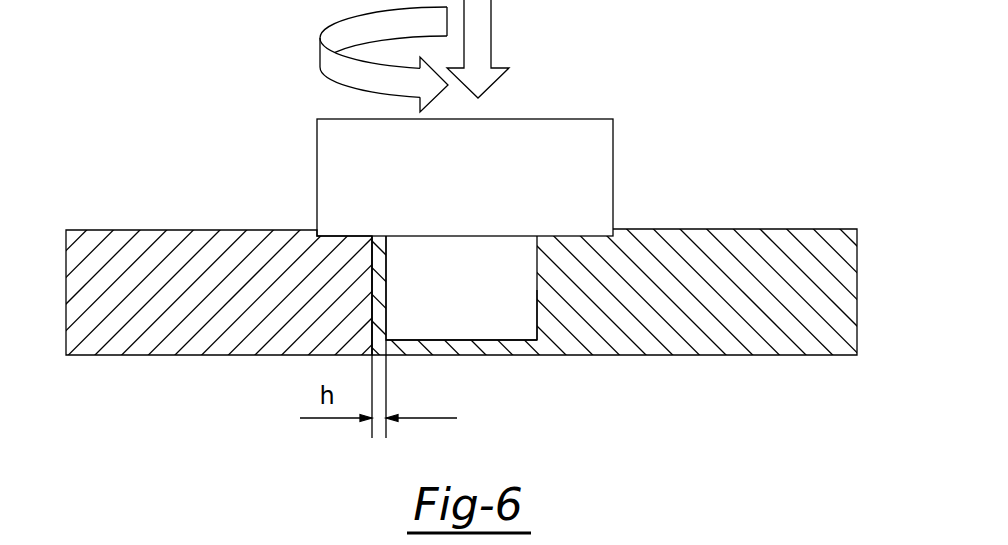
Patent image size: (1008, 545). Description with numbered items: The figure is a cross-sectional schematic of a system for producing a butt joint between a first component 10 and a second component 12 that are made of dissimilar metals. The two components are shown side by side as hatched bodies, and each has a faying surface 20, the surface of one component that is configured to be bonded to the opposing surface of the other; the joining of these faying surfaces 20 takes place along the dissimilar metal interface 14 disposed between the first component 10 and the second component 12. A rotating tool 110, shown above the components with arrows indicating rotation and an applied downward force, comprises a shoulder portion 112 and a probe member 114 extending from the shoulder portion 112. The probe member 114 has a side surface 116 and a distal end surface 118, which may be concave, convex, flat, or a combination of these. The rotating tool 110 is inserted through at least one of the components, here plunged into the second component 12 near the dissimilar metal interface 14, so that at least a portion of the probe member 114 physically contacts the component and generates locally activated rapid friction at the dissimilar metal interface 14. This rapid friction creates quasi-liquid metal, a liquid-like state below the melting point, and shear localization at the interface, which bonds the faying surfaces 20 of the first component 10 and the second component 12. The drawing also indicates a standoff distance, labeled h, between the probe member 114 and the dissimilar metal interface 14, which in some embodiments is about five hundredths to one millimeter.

The first component 10 is at (168, 230).
The second component 12 is at (720, 229).
The dissimilar metal interface 14 is at (372, 312).
The faying surface 20 is at (372, 258).
The rotating tool 110 is at (524, 216).
The shoulder portion 112 is at (613, 143).
The probe member 114 is at (538, 278).
The side surface 116 is at (537, 308).
The distal end surface 118 is at (502, 340).